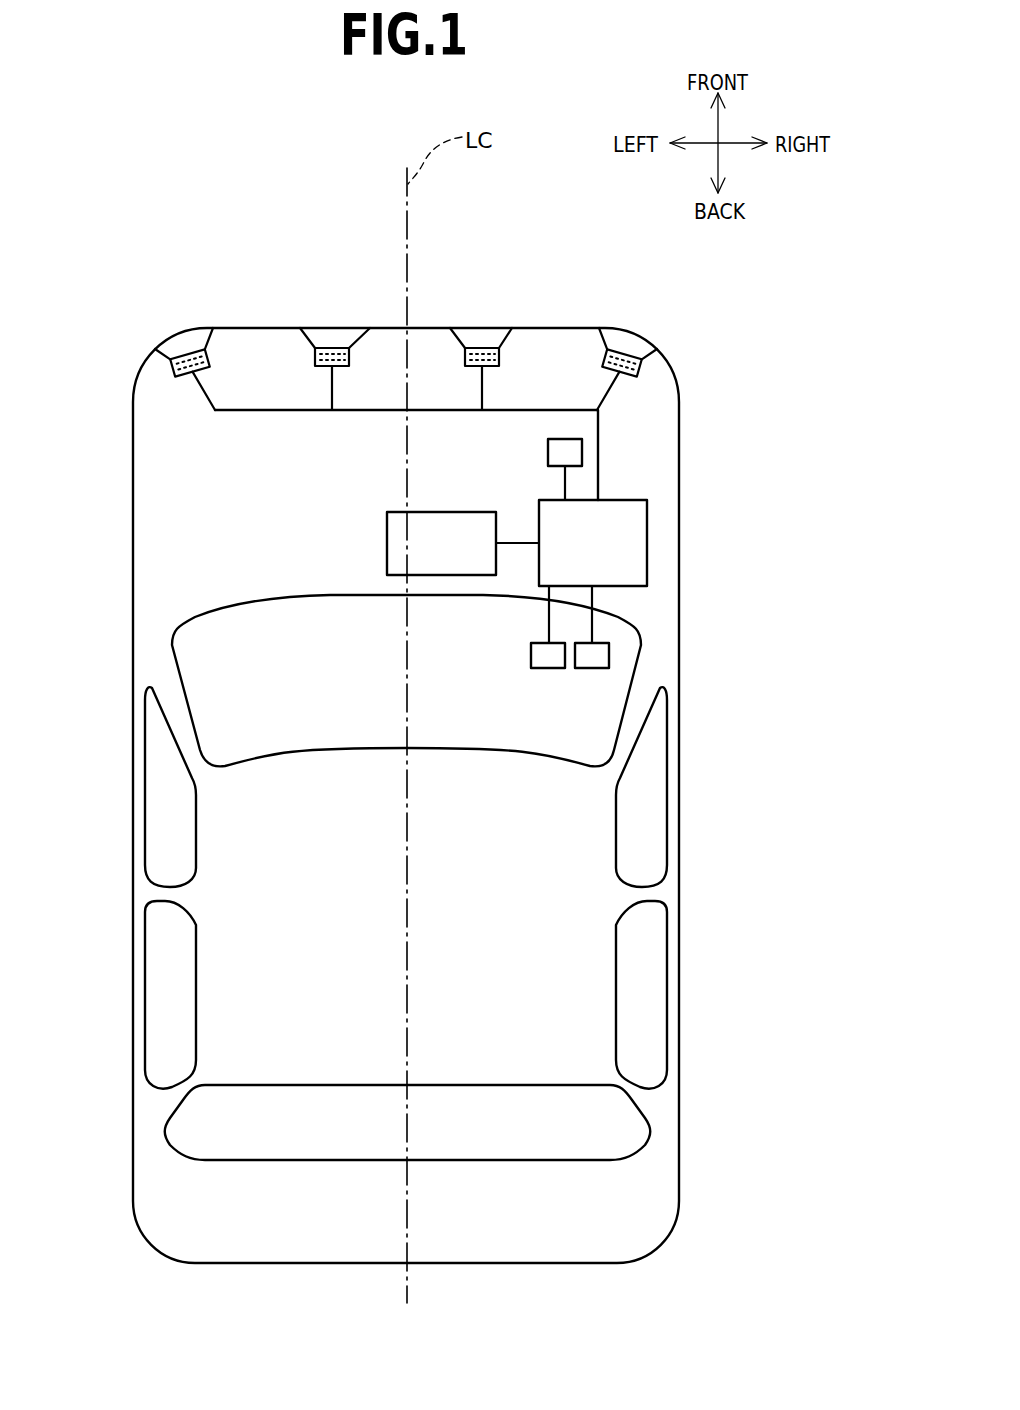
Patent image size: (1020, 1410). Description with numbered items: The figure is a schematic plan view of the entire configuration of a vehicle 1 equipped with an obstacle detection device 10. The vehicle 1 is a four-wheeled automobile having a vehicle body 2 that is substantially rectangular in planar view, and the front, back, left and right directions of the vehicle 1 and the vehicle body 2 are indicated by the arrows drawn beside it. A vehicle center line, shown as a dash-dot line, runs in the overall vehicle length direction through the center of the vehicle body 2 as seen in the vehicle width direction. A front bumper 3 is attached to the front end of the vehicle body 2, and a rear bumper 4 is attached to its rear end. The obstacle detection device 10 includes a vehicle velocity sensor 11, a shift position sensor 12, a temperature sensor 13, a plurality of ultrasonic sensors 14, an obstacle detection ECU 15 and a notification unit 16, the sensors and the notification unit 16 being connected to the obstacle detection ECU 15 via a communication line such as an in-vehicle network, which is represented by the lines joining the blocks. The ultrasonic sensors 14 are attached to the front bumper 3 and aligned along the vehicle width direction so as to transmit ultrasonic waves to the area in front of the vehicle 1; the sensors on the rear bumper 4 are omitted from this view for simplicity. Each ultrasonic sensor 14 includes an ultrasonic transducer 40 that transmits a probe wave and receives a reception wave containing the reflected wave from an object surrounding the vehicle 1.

The vehicle 1 is at (724, 815).
The vehicle body 2 is at (667, 882).
The front bumper 3 is at (675, 369).
The rear bumper 4 is at (660, 1242).
The obstacle detection device 10 is at (231, 525).
The vehicle velocity sensor 11 is at (600, 655).
The shift position sensor 12 is at (543, 656).
The temperature sensor 13 is at (556, 452).
The ultrasonic sensor 14 is at (170, 346).
The obstacle detection ECU 15 is at (648, 540).
The notification unit 16 is at (441, 512).
The ultrasonic transducer 40 is at (641, 371).